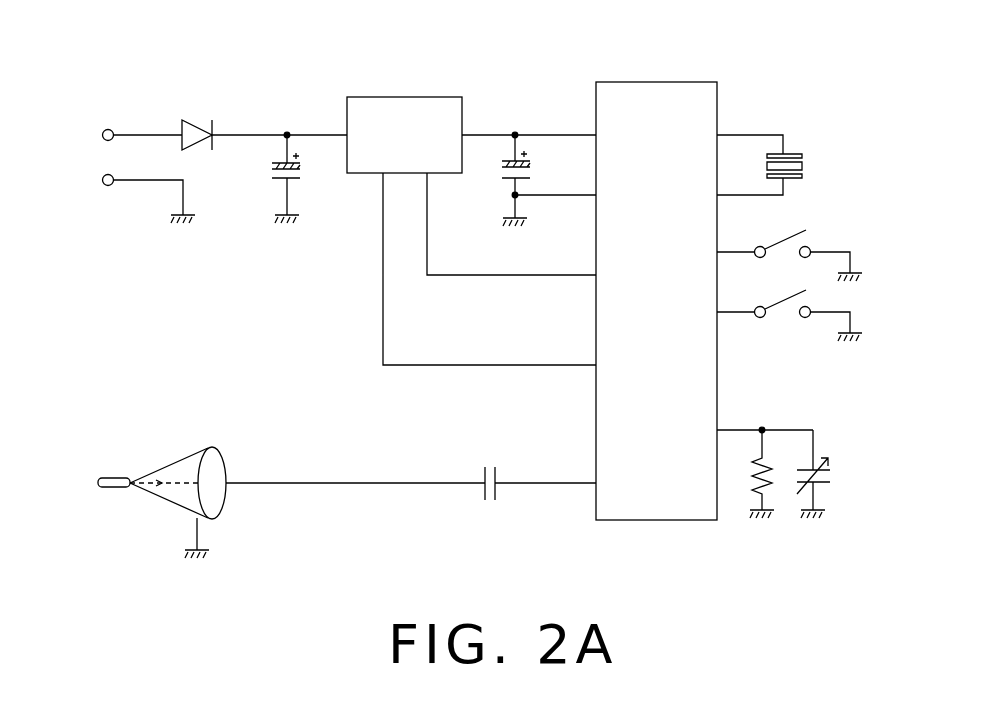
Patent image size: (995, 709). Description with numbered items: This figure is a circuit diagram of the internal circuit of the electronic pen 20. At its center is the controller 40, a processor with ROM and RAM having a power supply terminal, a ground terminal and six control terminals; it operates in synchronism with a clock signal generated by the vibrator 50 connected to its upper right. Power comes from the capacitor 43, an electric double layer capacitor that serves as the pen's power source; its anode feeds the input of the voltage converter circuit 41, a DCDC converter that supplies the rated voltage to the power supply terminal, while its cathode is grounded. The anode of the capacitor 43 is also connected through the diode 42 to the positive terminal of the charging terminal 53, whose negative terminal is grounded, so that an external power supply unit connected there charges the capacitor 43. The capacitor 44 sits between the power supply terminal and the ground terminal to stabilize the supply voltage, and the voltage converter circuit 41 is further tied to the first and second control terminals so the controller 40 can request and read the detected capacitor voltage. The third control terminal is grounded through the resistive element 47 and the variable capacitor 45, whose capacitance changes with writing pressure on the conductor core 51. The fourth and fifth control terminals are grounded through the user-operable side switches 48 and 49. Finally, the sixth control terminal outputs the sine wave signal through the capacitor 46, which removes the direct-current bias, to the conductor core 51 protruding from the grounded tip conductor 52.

The electronic pen 20 is at (793, 66).
The controller 40 is at (656, 82).
The voltage converter circuit 41 is at (402, 97).
The diode 42 is at (203, 121).
The capacitor 43 is at (282, 180).
The capacitor 44 is at (508, 180).
The capacitor 45 is at (822, 487).
The capacitor 46 is at (486, 466).
The resistive element 47 is at (768, 497).
The switch 48 is at (805, 320).
The switch 49 is at (808, 246).
The vibrator 50 is at (792, 153).
The conductor core 51 is at (112, 489).
The tip conductor 52 is at (182, 456).
The charging terminal 53 is at (102, 178).